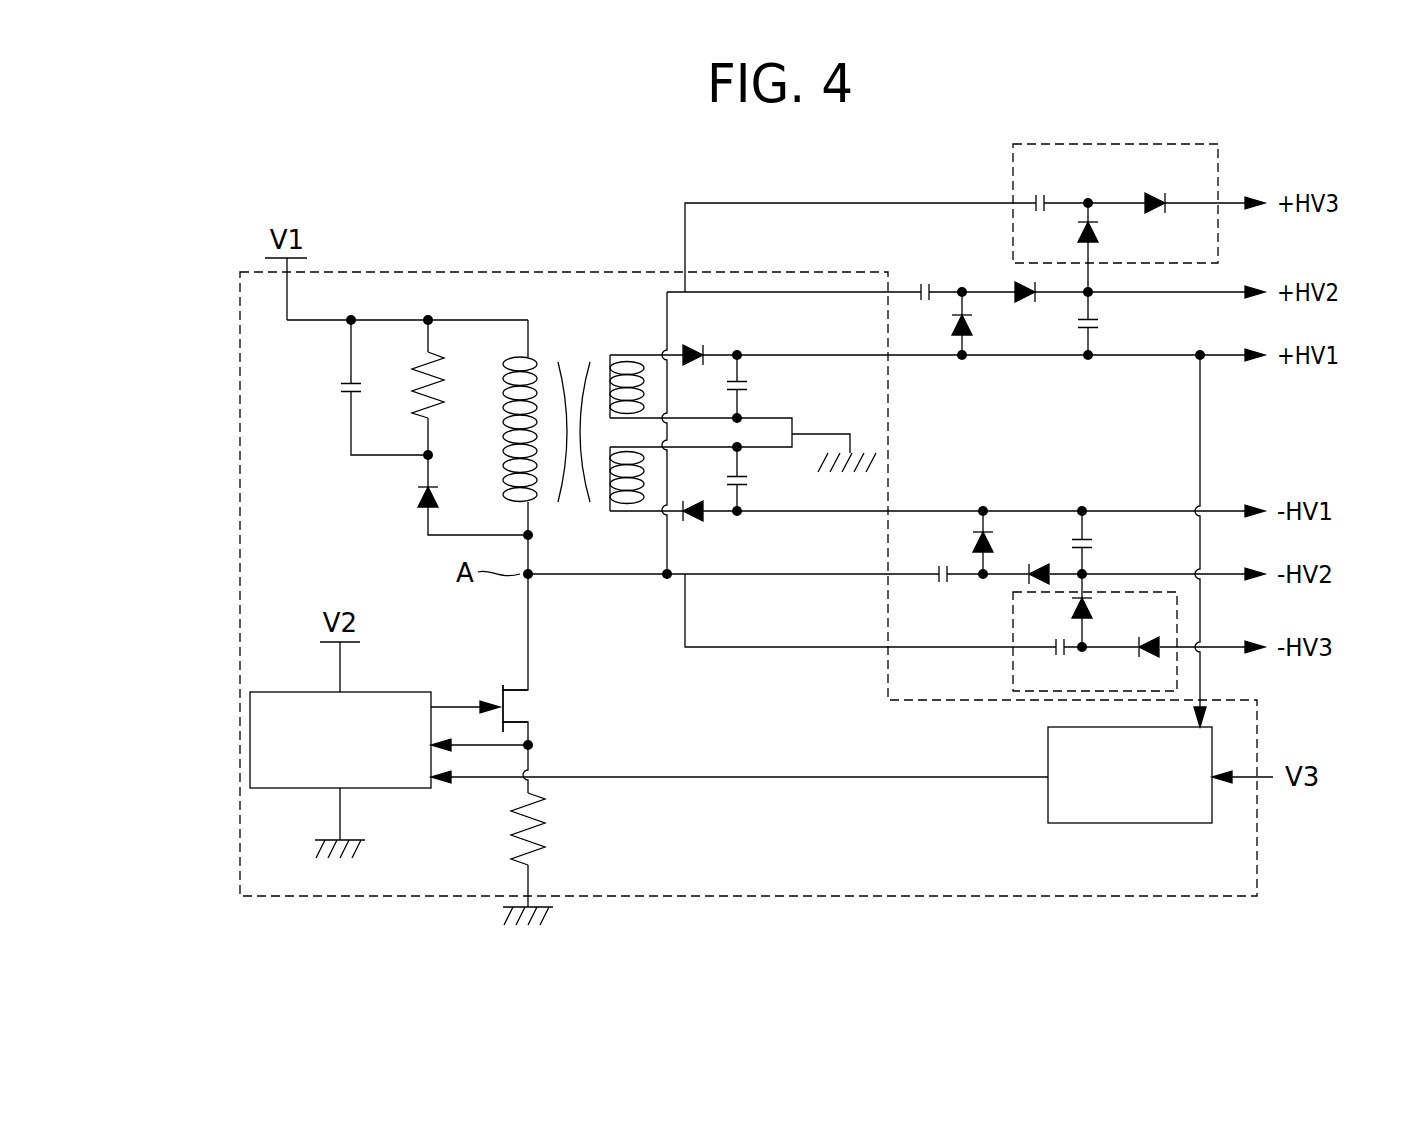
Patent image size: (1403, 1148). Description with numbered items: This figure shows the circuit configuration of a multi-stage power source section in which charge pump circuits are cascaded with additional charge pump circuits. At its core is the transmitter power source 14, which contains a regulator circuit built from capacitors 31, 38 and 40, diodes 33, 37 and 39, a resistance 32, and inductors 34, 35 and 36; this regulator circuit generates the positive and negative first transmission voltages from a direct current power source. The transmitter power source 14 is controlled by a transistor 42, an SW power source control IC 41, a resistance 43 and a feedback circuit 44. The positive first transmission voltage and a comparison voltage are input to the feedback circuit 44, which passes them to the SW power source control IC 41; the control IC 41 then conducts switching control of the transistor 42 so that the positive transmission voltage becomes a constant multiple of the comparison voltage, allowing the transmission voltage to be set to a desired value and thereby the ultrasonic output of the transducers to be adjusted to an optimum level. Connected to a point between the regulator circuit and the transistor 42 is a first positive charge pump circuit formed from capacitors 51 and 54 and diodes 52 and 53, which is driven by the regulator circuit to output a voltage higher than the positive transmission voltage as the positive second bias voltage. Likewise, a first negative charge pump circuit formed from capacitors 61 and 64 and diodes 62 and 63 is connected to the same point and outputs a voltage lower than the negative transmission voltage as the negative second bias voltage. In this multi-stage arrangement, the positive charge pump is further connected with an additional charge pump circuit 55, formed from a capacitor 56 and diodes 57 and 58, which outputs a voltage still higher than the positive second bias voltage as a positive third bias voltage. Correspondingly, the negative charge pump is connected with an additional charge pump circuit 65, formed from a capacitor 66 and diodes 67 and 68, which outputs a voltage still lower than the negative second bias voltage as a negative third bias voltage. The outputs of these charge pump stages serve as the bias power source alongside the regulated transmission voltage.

The transmitter power source 14 is at (536, 270).
The capacitor 31 is at (338, 388).
The resistance 32 is at (412, 403).
The diode 33 is at (418, 503).
The inductor 34 is at (503, 432).
The inductor 35 is at (630, 353).
The inductor 36 is at (630, 513).
The diode 37 is at (693, 368).
The capacitor 38 is at (750, 386).
The diode 39 is at (693, 500).
The capacitor 40 is at (750, 482).
The SW power source control IC 41 is at (264, 691).
The transistor 42 is at (524, 706).
The resistance 43 is at (547, 828).
The feedback circuit 44 is at (1192, 824).
The capacitor 51 is at (925, 282).
The diode 52 is at (1028, 304).
The diode 53 is at (952, 323).
The capacitor 54 is at (1100, 323).
The additional charge pump circuit 55 is at (1012, 171).
The capacitor 56 is at (1043, 195).
The diode 57 is at (1160, 196).
The diode 58 is at (1100, 231).
The capacitor 61 is at (943, 587).
The diode 62 is at (1035, 563).
The diode 63 is at (974, 543).
The capacitor 64 is at (1095, 545).
The additional charge pump circuit 65 is at (1012, 680).
The capacitor 66 is at (1058, 656).
The diode 67 is at (1146, 656).
The diode 68 is at (1095, 606).